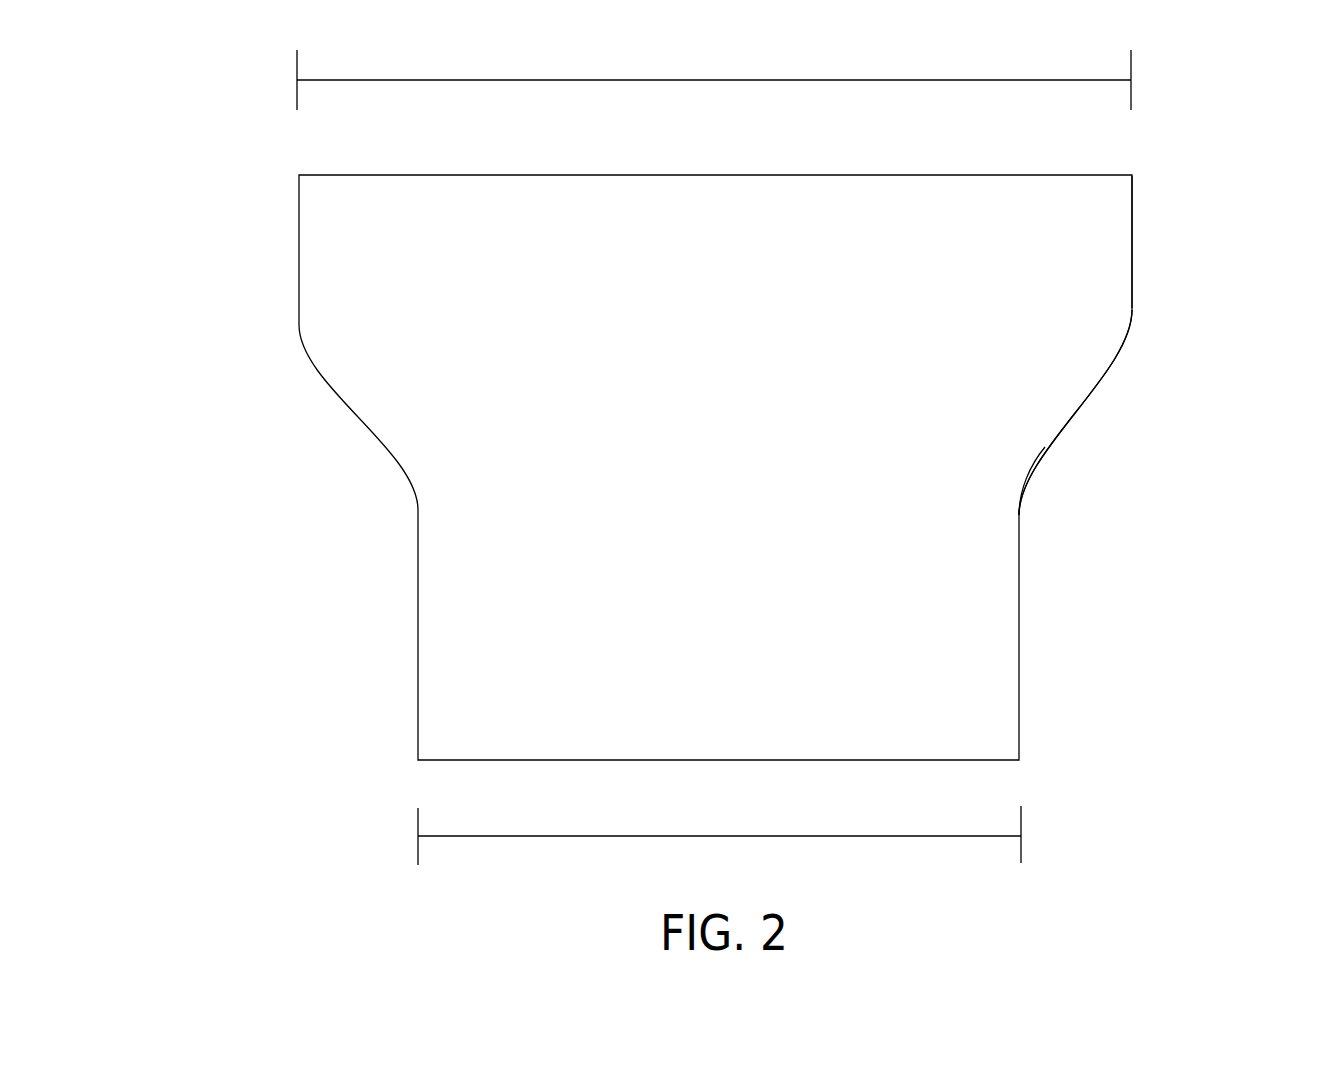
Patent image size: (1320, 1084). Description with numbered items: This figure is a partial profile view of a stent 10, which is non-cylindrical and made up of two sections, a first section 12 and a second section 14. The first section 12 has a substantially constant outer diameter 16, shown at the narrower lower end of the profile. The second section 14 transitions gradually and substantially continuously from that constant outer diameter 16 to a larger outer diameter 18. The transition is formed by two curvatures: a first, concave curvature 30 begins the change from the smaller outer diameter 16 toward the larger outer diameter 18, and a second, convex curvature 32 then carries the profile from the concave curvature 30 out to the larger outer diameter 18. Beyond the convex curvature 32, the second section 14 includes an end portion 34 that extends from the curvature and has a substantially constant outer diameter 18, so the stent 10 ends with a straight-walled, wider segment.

The stent 10 is at (646, 433).
The first section 12 is at (250, 482).
The second section 14 is at (250, 178).
The constant outer diameter 16 is at (719, 840).
The larger outer diameter 18 is at (714, 79).
The first, concave curvature 30 is at (1028, 475).
The second, convex curvature 32 is at (1127, 355).
The end portion 34 is at (1166, 178).